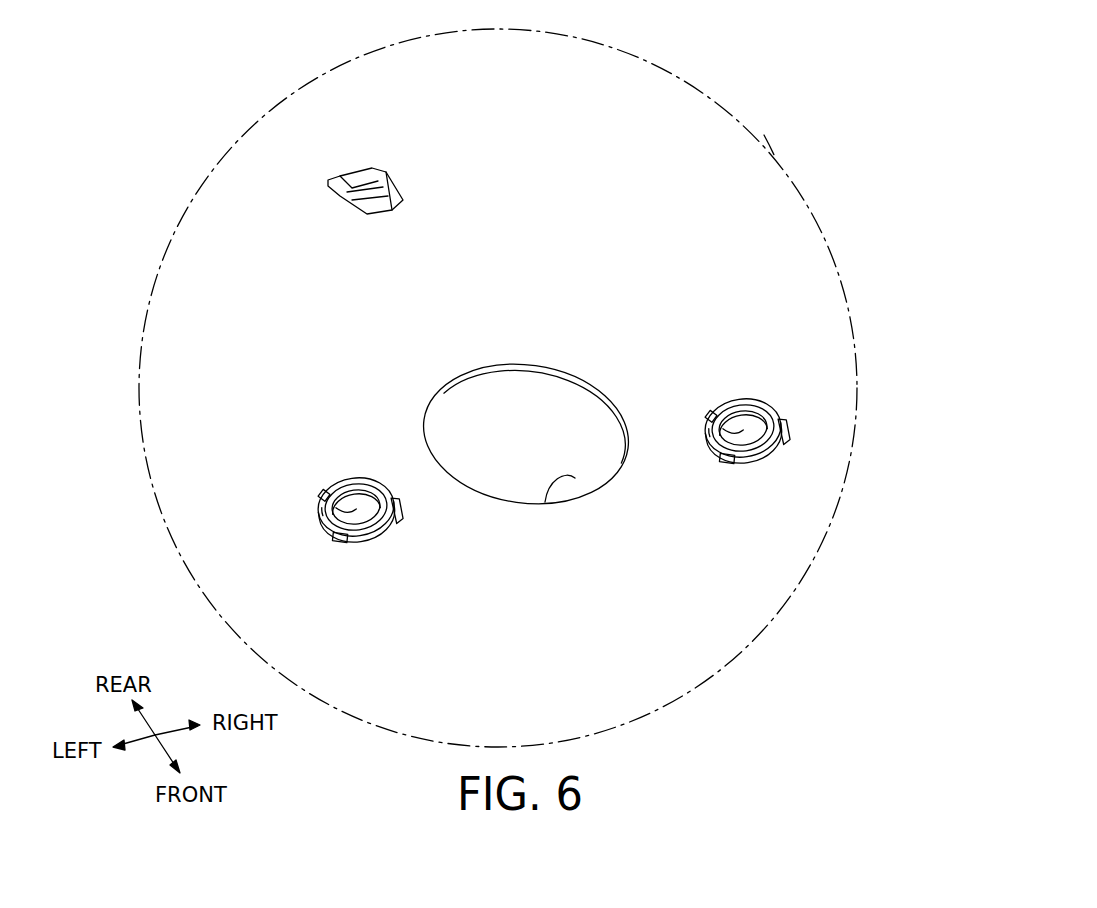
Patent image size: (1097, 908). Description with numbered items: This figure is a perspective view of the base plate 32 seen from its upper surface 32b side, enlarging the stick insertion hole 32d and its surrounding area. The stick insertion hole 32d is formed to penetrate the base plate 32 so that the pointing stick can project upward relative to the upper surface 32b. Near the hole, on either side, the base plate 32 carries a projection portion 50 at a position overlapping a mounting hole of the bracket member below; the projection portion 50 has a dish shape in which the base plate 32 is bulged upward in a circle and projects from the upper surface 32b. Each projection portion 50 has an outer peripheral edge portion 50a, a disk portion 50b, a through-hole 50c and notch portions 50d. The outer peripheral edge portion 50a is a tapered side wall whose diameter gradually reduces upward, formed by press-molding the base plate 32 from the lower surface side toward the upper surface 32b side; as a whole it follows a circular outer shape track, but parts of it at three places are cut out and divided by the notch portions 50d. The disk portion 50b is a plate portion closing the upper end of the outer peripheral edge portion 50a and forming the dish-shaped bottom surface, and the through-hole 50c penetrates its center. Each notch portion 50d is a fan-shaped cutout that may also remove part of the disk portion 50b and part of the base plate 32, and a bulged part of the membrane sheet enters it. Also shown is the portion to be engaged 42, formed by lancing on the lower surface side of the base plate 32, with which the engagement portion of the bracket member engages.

The base plate 32 is at (655, 93).
The upper surface 32b is at (733, 150).
The stick insertion hole 32d is at (575, 478).
The portion to be engaged 42 is at (362, 212).
The projection portion 50 is at (509, 484).
The outer peripheral edge portion 50a is at (368, 538).
The disk portion 50b is at (372, 478).
The through-hole 50c is at (320, 508).
The notch portions 50d is at (333, 484).